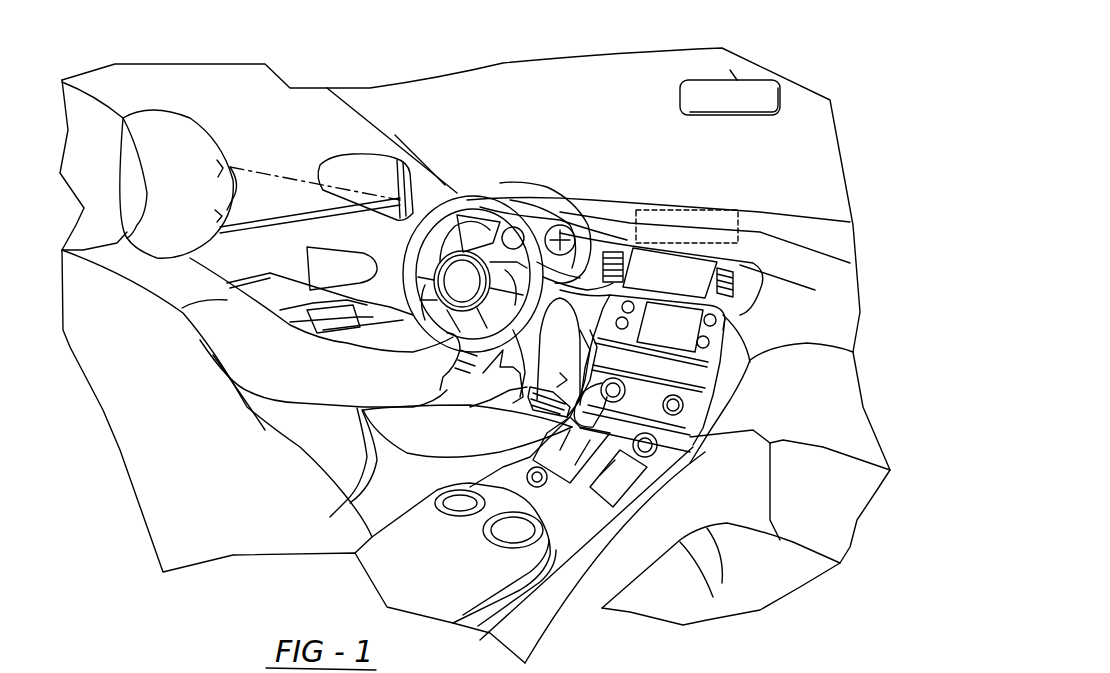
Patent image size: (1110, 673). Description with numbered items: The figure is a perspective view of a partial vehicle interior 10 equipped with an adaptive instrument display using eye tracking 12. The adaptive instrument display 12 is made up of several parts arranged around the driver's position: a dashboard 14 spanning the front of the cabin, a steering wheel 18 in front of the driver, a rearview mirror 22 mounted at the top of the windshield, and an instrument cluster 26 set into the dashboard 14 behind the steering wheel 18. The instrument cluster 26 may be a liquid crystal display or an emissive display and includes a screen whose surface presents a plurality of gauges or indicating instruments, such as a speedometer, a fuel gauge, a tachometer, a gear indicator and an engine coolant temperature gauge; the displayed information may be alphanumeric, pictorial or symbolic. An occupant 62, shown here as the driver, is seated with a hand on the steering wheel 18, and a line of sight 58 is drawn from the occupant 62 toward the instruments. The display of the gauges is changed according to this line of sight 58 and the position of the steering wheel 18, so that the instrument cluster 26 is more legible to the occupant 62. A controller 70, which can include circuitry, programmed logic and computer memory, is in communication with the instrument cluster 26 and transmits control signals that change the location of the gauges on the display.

The partial vehicle interior 10 is at (640, 98).
The adaptive instrument display using eye tracking 12 is at (540, 225).
The dashboard 14 is at (817, 220).
The steering wheel 18 is at (478, 192).
The rearview mirror 22 is at (760, 93).
The instrument cluster 26 is at (570, 233).
The line of sight 58 is at (277, 177).
The occupant 62 is at (192, 120).
The controller 70 is at (740, 226).